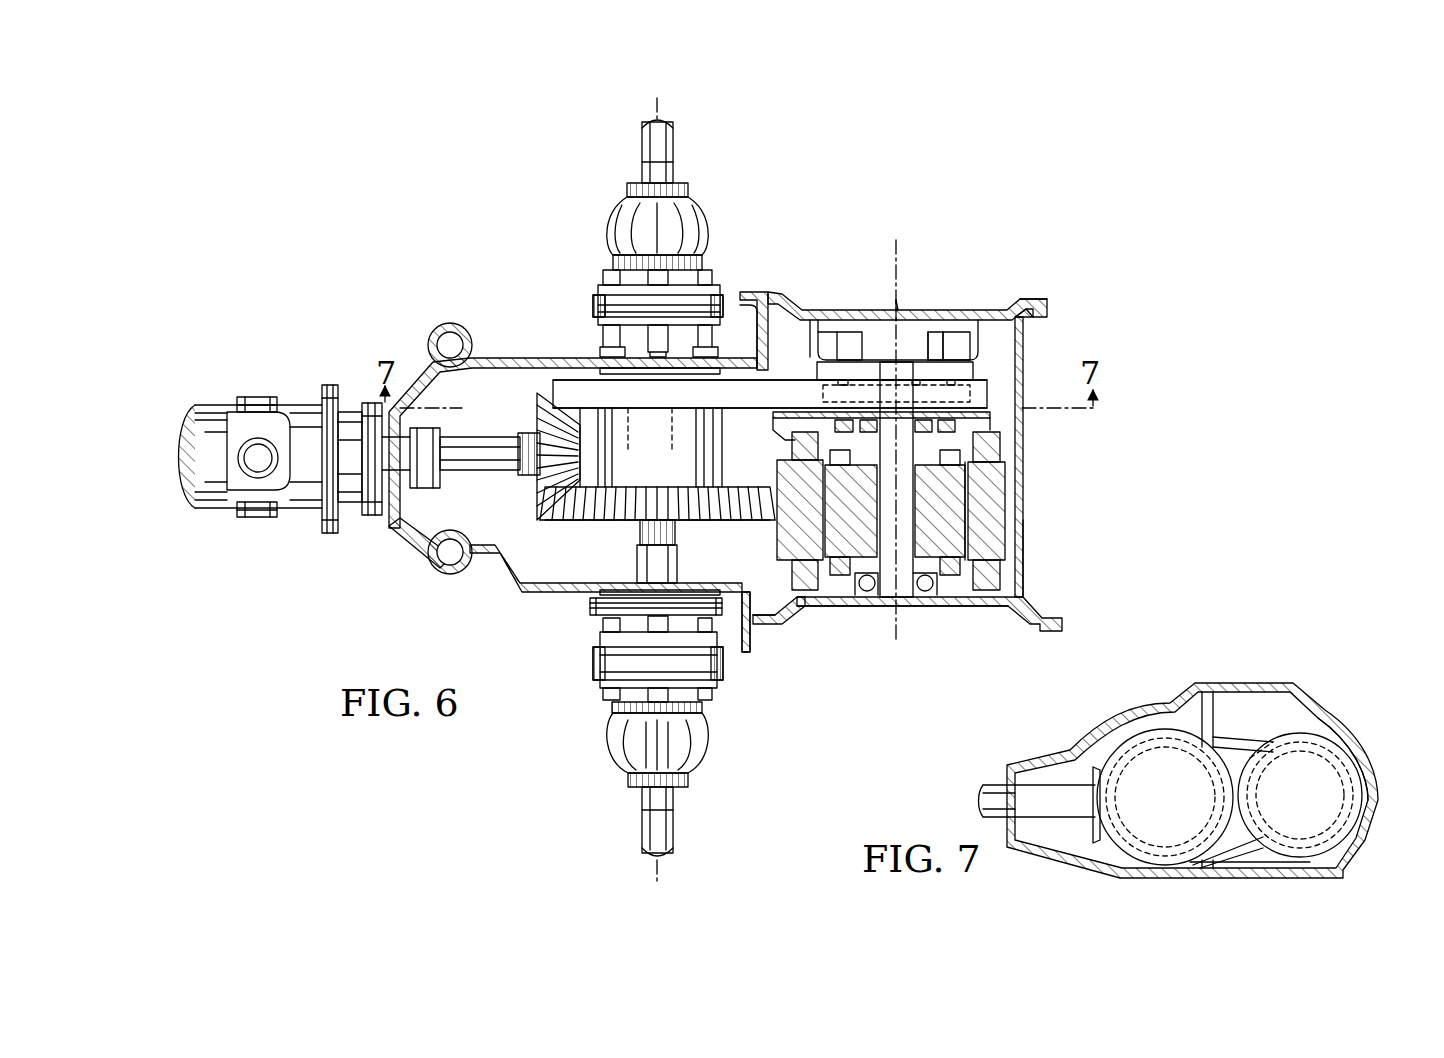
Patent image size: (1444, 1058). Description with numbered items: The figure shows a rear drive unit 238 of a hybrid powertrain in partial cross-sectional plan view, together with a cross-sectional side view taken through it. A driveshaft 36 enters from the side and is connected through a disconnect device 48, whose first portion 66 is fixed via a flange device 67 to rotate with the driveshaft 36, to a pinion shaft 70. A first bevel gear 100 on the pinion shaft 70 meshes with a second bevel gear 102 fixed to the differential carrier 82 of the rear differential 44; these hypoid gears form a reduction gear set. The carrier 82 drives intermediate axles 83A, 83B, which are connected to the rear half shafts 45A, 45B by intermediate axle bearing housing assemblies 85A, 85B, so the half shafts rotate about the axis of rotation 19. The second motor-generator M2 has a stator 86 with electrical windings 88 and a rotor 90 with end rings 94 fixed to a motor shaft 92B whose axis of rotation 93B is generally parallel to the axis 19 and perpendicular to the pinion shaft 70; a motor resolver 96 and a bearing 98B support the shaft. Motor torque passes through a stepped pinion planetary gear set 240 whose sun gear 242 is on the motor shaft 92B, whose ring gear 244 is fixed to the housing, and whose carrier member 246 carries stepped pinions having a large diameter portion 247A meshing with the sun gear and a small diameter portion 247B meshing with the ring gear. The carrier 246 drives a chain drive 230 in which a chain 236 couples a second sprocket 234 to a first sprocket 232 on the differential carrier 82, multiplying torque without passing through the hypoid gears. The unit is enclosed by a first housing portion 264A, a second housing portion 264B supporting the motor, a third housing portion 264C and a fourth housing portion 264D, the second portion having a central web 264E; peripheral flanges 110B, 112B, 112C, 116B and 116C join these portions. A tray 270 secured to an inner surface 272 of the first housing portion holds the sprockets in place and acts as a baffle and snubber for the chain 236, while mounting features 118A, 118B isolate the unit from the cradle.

In FIG. 6, the axis of rotation 19 is at (657, 99).
In FIG. 6, the driveshaft 36 is at (240, 522).
In FIG. 6, the rear differential 44 is at (722, 440).
In FIG. 6, the rear half shaft 45A is at (678, 170).
In FIG. 6, the rear half shaft 45B is at (642, 805).
In FIG. 6, the disconnect device 48 is at (422, 490).
In FIG. 6, the first portion 66 is at (402, 437).
In FIG. 6, the flange device 67 is at (372, 518).
In FIG. 6, the pinion shaft 70 is at (470, 436).
In FIG. 6, the differential carrier 82 is at (700, 487).
In FIG. 6, the intermediate axle 83A is at (612, 400).
In FIG. 6, the intermediate axle 83B is at (637, 565).
In FIG. 6, the intermediate axle bearing housing assembly 85A is at (707, 272).
In FIG. 6, the intermediate axle bearing housing assembly 85B is at (612, 750).
In FIG. 6, the stator 86 is at (892, 511).
In FIG. 6, the electrical windings 88 is at (1005, 465).
In FIG. 6, the rotor 90 is at (895, 511).
In FIG. 6, the motor shaft 92B is at (898, 630).
In FIG. 6, the axis of rotation 93B is at (896, 305).
In FIG. 6, the end rings 94 is at (985, 608).
In FIG. 6, the motor resolver 96 is at (985, 511).
In FIG. 6, the bearing 98B is at (867, 597).
In FIG. 6, the first bevel gear 100 is at (548, 382).
In FIG. 6, the second bevel gear 102 is at (672, 525).
In FIG. 7, the second bevel gear 102 is at (1163, 730).
In FIG. 6, the peripheral flange 110B is at (745, 318).
In FIG. 6, the peripheral flange 112B is at (798, 322).
In FIG. 6, the peripheral flange 112C is at (1047, 308).
In FIG. 6, the peripheral flange 116B is at (796, 310).
In FIG. 6, the peripheral flange 116C is at (1058, 625).
In FIG. 6, the mounting feature 118A is at (440, 325).
In FIG. 6, the mounting feature 118B is at (452, 575).
In FIG. 6, the chain drive 230 is at (540, 395).
In FIG. 6, the first sprocket 232 is at (590, 378).
In FIG. 7, the first sprocket 232 is at (1203, 710).
In FIG. 6, the second sprocket 234 is at (1005, 455).
In FIG. 7, the second sprocket 234 is at (1290, 700).
In FIG. 6, the chain 236 is at (832, 400).
In FIG. 7, the chain 236 is at (1235, 745).
In FIG. 6, the rear drive unit 238 is at (942, 268).
In FIG. 6, the planetary gear set 240 is at (920, 333).
In FIG. 6, the sun gear 242 is at (911, 267).
In FIG. 6, the ring gear 244 is at (948, 343).
In FIG. 6, the carrier member 246 is at (955, 402).
In FIG. 6, the large diameter portion 247A is at (842, 375).
In FIG. 6, the small diameter portion 247B is at (858, 380).
In FIG. 6, the first housing portion 264A is at (495, 572).
In FIG. 7, the first housing portion 264A is at (1125, 715).
In FIG. 6, the second housing portion 264B is at (1023, 575).
In FIG. 7, the second housing portion 264B is at (1318, 707).
In FIG. 6, the third housing portion 264C is at (1035, 298).
In FIG. 6, the fourth housing portion 264D is at (790, 620).
In FIG. 6, the central web 264E is at (1023, 470).
In FIG. 7, the tray 270 is at (1245, 868).
In FIG. 7, the inner surface 272 is at (1103, 862).
In FIG. 7, the second motor-generator M2 is at (1345, 752).